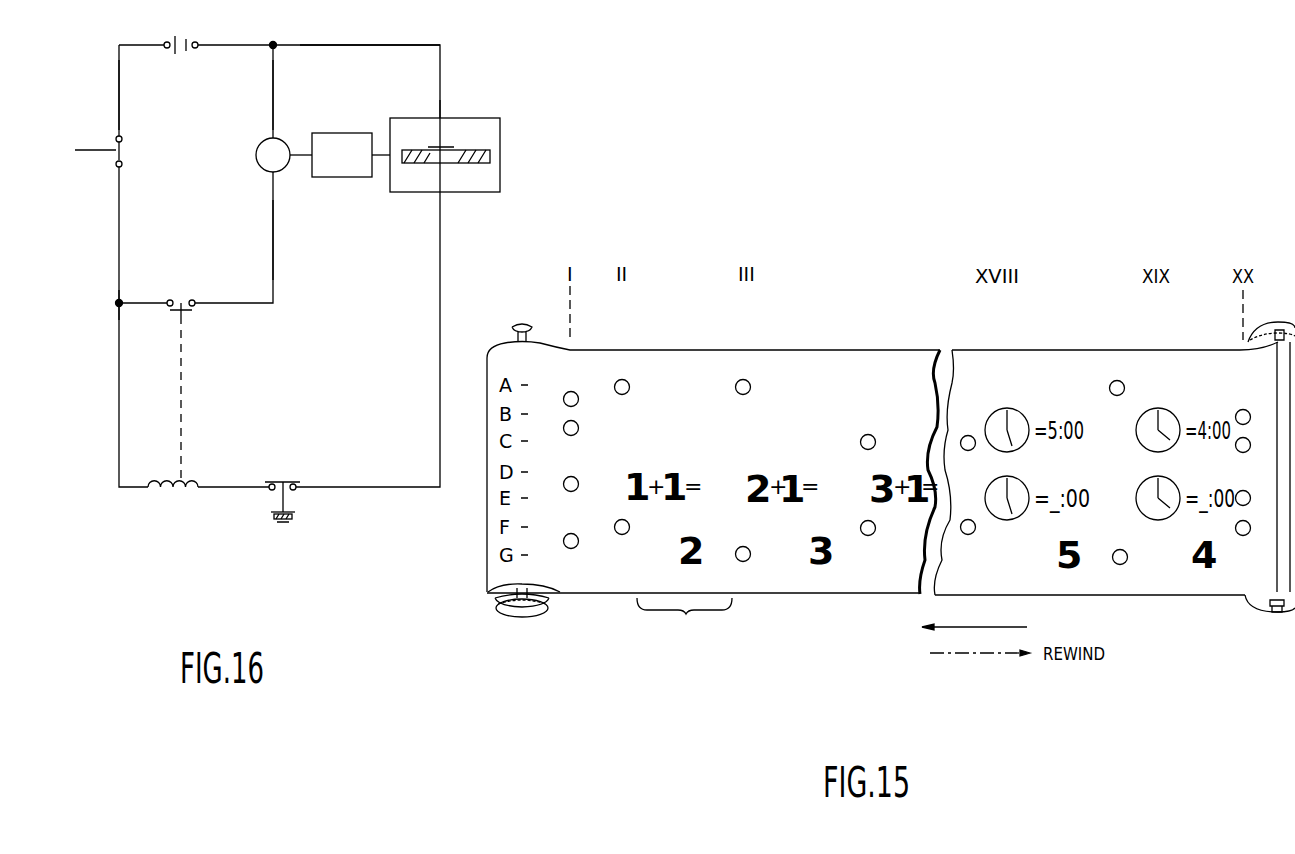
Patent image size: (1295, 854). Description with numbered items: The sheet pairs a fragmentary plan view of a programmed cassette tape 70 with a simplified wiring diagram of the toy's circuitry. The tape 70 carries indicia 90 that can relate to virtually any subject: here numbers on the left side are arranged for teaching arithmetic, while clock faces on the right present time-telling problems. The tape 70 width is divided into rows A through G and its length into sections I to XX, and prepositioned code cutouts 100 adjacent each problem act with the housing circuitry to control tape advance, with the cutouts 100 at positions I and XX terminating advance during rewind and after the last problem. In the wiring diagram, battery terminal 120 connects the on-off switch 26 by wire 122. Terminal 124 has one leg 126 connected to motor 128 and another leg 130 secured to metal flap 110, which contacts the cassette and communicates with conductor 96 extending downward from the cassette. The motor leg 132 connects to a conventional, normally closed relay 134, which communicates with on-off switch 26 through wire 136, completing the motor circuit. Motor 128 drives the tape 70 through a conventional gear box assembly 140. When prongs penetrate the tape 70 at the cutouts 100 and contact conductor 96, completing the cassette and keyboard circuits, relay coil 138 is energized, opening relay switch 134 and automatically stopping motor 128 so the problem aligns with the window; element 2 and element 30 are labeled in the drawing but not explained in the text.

In FIG. 16, the housing 2 is at (283, 530).
In FIG. 16, the on-off switch 26 is at (95, 150).
In FIG. 16, the switch 30 is at (288, 505).
In FIG. 16, the tape 70 is at (486, 152).
In FIG. 15, the tape 70 is at (1110, 578).
In FIG. 15, the indicia 90 is at (684, 622).
In FIG. 16, the conductor 96 is at (440, 107).
In FIG. 15, the cutouts 100 is at (628, 382).
In FIG. 16, the metal flap 110 is at (438, 99).
In FIG. 16, the battery terminal 120 is at (156, 40).
In FIG. 16, the wire 122 is at (119, 96).
In FIG. 16, the terminal 124 is at (198, 43).
In FIG. 16, the leg 126 is at (273, 87).
In FIG. 16, the motor 128 is at (257, 164).
In FIG. 16, the leg 130 is at (390, 45).
In FIG. 16, the motor leg 132 is at (273, 245).
In FIG. 16, the relay 134 is at (183, 312).
In FIG. 16, the wire 136 is at (134, 308).
In FIG. 16, the relay coil 138 is at (178, 491).
In FIG. 16, the gear box assembly 140 is at (352, 177).